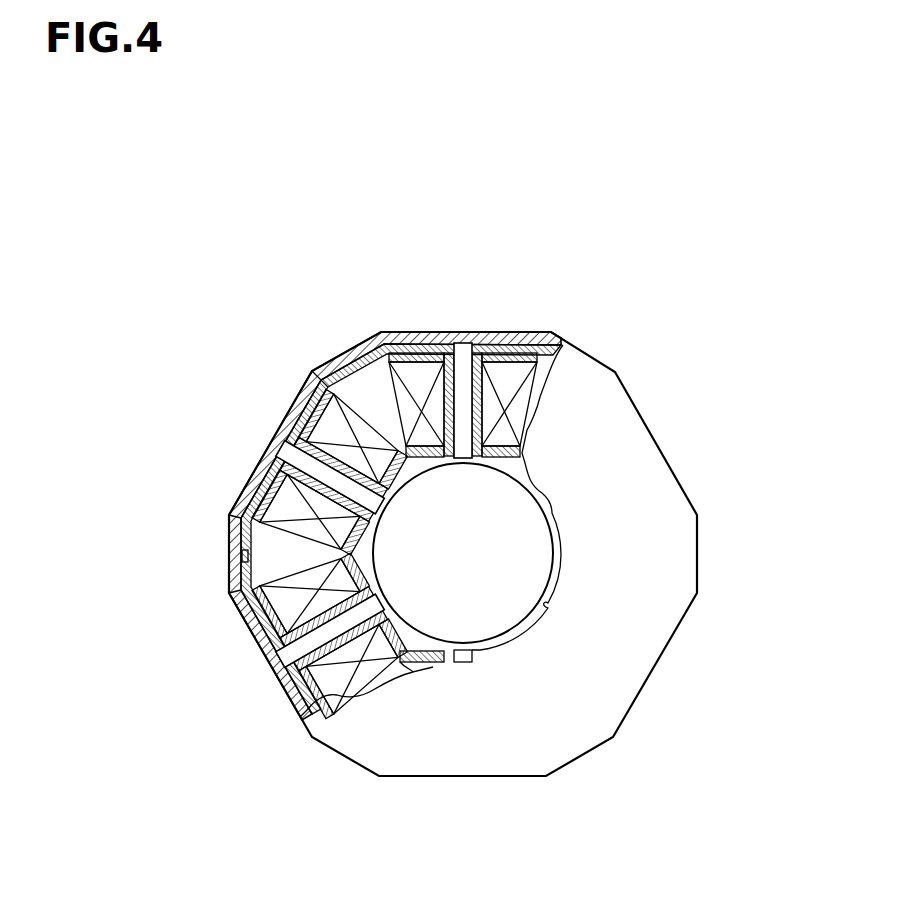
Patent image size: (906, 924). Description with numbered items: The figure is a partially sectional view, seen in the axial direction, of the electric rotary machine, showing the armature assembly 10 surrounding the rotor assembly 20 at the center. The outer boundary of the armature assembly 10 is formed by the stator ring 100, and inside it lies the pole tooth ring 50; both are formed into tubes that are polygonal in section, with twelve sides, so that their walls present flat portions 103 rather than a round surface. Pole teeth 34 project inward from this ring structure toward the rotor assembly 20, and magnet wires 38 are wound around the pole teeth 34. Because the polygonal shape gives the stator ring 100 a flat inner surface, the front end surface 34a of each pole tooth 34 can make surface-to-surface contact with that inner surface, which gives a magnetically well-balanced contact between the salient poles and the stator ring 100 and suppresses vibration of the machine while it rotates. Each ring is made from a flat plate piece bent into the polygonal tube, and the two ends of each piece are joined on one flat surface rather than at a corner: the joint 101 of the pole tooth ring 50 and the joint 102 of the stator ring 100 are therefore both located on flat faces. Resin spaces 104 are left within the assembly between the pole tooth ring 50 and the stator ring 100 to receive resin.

The armature assembly 10 is at (645, 297).
The rotor assembly 20 is at (530, 562).
The pole tooth 34 is at (545, 385).
The front end surface 34a is at (463, 340).
The magnet wire 38 is at (513, 418).
The pole tooth ring 50 is at (400, 330).
The stator ring 100 is at (507, 330).
The joint of the pole tooth ring 101 is at (228, 575).
The joint of the stator ring 102 is at (367, 390).
The flat portion 103 is at (228, 532).
The resin space 104 is at (313, 369).